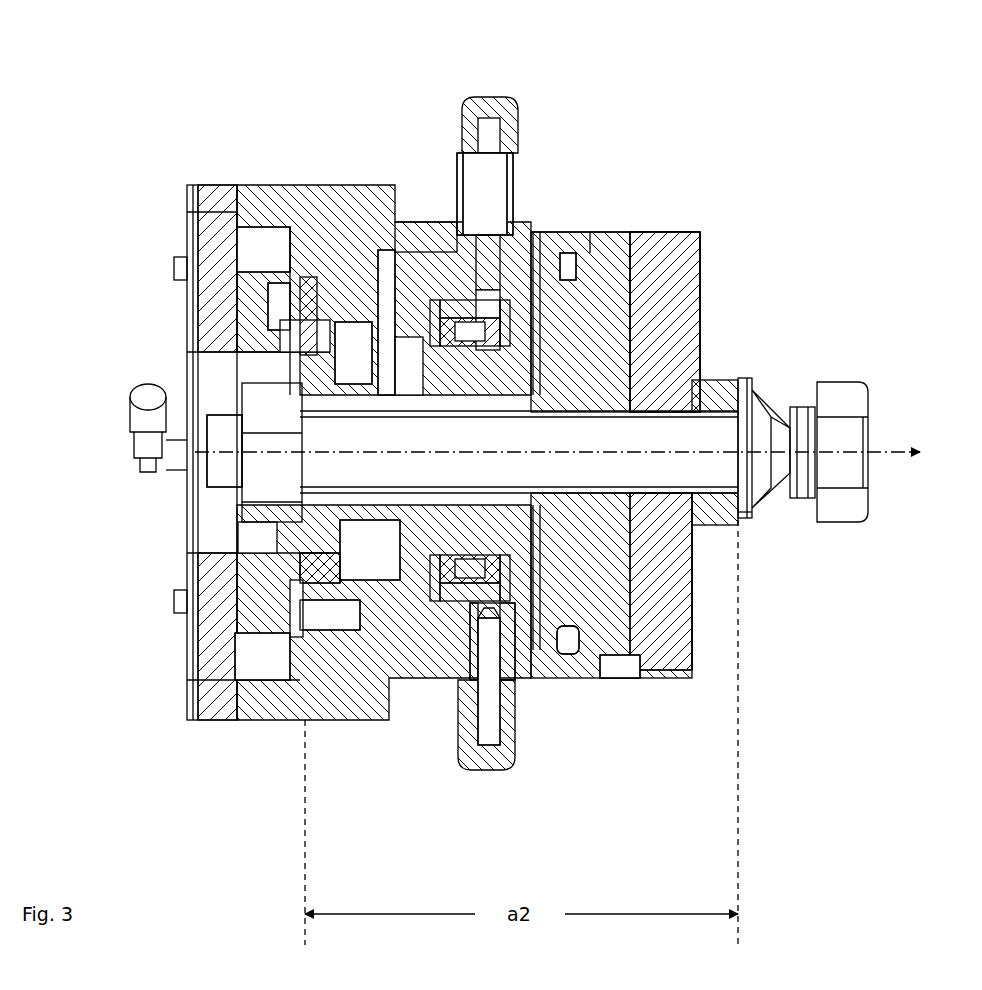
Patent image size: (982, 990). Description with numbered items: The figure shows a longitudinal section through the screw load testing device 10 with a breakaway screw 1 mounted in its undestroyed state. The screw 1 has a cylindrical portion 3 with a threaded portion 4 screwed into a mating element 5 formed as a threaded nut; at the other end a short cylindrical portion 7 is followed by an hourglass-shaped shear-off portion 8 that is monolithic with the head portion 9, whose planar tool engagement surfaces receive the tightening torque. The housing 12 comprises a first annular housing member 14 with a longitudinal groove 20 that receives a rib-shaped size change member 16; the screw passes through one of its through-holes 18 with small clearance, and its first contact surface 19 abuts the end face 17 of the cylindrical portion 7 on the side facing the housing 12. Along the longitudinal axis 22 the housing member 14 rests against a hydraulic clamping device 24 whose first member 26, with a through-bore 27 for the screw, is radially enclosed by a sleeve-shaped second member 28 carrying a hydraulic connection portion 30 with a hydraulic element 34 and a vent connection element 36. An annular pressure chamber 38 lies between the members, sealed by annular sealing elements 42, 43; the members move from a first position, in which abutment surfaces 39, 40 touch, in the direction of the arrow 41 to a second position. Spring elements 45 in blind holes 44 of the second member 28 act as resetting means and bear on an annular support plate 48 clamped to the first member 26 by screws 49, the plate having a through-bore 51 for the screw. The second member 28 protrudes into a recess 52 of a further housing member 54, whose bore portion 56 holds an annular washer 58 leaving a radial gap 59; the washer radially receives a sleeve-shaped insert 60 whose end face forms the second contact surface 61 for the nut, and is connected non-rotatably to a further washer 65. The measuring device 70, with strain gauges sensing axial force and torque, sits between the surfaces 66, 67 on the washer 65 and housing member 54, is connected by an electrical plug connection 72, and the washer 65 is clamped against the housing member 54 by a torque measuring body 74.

The screw 1 is at (519, 452).
The cylindrical portion 3 is at (675, 600).
The threaded portion 4 is at (232, 425).
The mating element 5 is at (268, 487).
The cylindrical portion 7 is at (755, 400).
The shear-off portion 8 is at (786, 420).
The head portion 9 is at (838, 395).
The screw load testing device 10 is at (745, 156).
The housing 12 is at (632, 186).
The first housing member 14 is at (700, 236).
The size change member 16 is at (708, 525).
The end face 17 is at (745, 395).
The through-holes 18 is at (728, 505).
The first contact surface 19 is at (740, 520).
The longitudinal groove 20 is at (700, 383).
The longitudinal axis 22 is at (888, 520).
The clamping device 24 is at (560, 232).
The first member 26 is at (605, 665).
The through-bore 27 is at (565, 408).
The second member 28 is at (402, 250).
The hydraulic connection portion 30 is at (500, 262).
The hydraulic element 34 is at (490, 120).
The vent connection element 36 is at (482, 700).
The annular pressure chamber 38 is at (522, 300).
The abutment surface 39 is at (582, 242).
The abutment surface 40 is at (598, 242).
The arrow 41 is at (886, 533).
The annular sealing element 42 is at (500, 690).
The annular sealing element 43 is at (568, 645).
The blind holes 44 is at (450, 318).
The spring element 45 is at (438, 345).
The annular support plate 48 is at (420, 600).
The screws 49 is at (405, 318).
The through-bore 51 is at (340, 610).
The recess 52 is at (392, 388).
The further housing member 54 is at (292, 700).
The bore portion 56 is at (330, 345).
The annular washer 58 is at (300, 640).
The radial gap 59 is at (345, 636).
The sleeve-shaped insert 60 is at (325, 530).
The second contact surface 61 is at (270, 358).
The further washer 65 is at (345, 548).
The surface 66 is at (262, 300).
The surface 67 is at (300, 312).
The measuring device 70 is at (262, 288).
The electrical plug connection 72 is at (132, 438).
The torque measuring body 74 is at (228, 212).